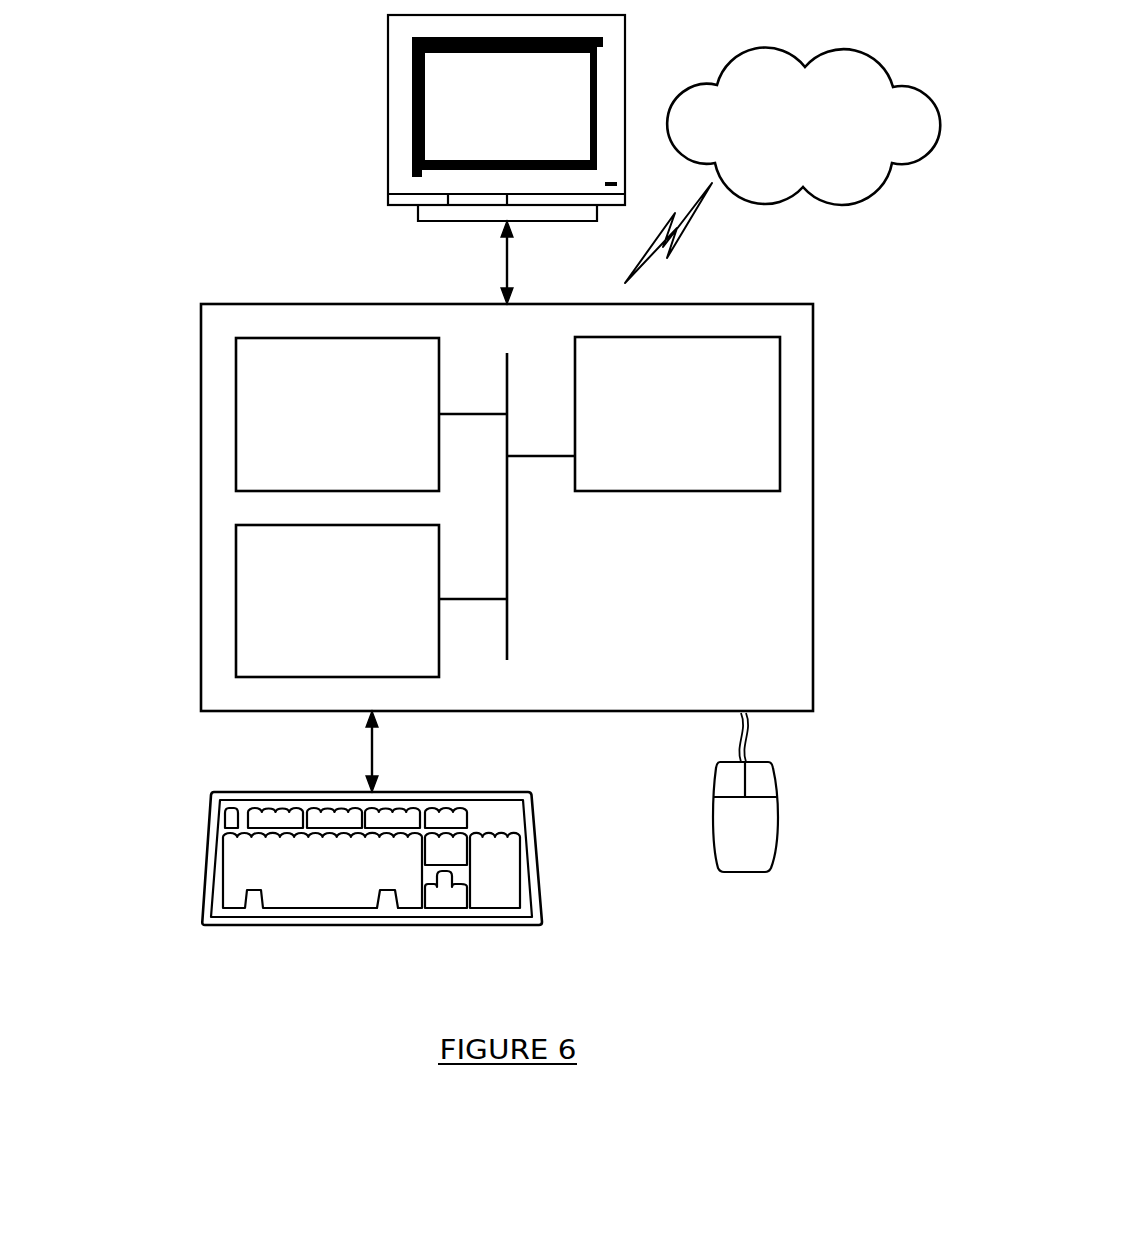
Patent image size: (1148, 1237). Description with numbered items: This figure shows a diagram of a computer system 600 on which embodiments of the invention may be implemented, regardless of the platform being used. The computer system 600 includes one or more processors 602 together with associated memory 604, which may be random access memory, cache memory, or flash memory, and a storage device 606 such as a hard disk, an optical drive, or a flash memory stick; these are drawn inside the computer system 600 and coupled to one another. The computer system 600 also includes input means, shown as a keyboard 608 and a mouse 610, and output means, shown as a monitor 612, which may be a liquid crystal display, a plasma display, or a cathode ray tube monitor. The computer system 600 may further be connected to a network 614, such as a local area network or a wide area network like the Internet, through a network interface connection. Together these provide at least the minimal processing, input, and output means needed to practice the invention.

The computer system 600 is at (438, 467).
The processor 602 is at (658, 438).
The memory 604 is at (318, 438).
The storage device 606 is at (318, 626).
The keyboard 608 is at (302, 896).
The mouse 610 is at (800, 826).
The monitor 612 is at (488, 132).
The network 614 is at (784, 150).